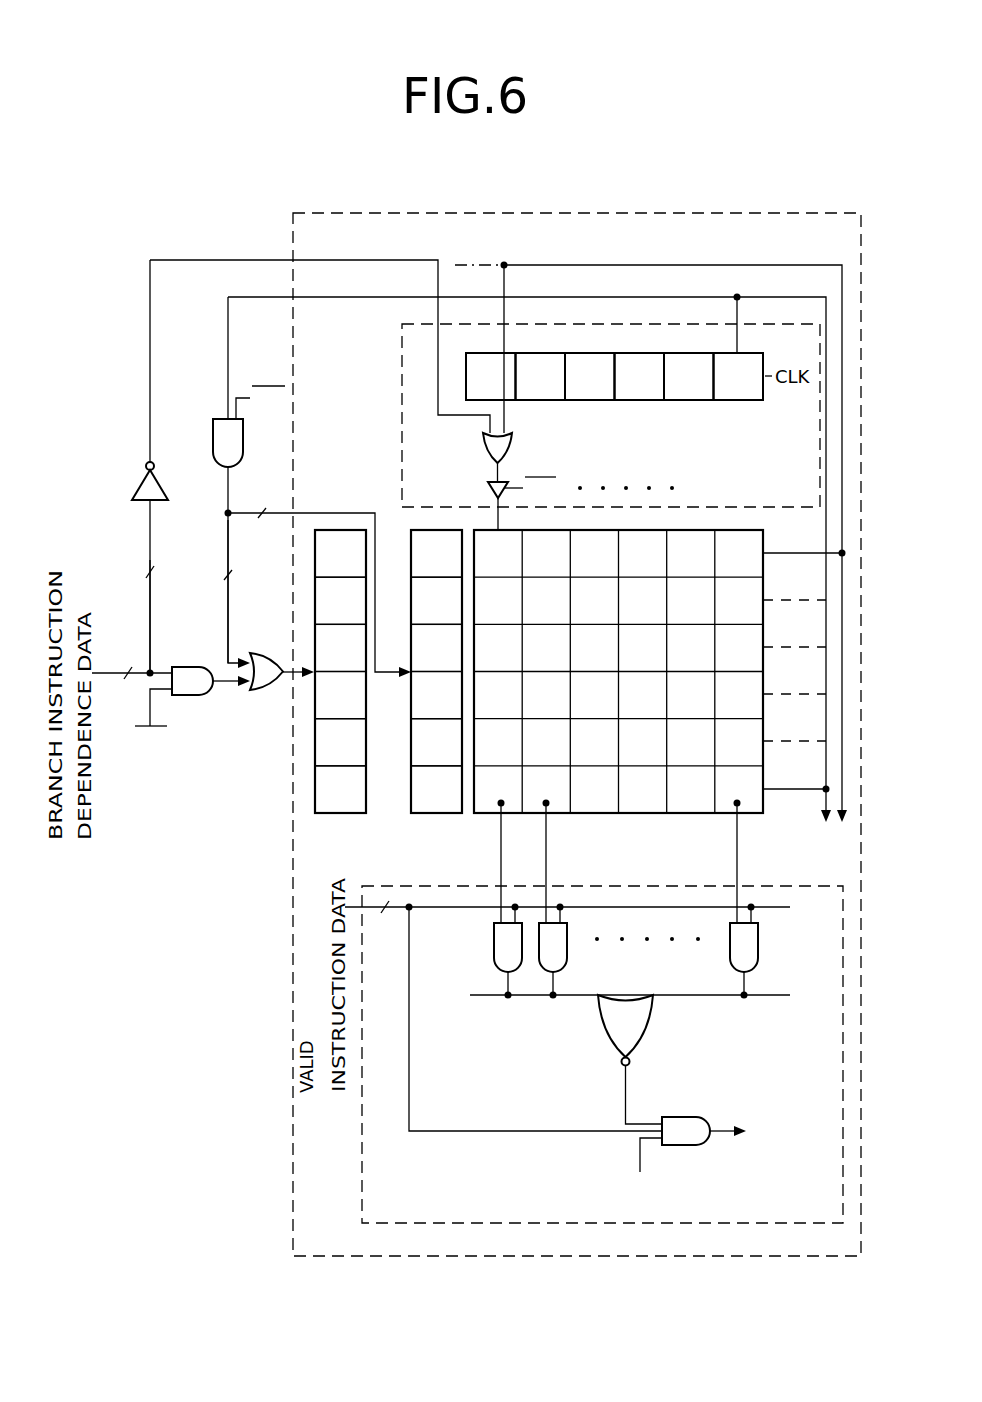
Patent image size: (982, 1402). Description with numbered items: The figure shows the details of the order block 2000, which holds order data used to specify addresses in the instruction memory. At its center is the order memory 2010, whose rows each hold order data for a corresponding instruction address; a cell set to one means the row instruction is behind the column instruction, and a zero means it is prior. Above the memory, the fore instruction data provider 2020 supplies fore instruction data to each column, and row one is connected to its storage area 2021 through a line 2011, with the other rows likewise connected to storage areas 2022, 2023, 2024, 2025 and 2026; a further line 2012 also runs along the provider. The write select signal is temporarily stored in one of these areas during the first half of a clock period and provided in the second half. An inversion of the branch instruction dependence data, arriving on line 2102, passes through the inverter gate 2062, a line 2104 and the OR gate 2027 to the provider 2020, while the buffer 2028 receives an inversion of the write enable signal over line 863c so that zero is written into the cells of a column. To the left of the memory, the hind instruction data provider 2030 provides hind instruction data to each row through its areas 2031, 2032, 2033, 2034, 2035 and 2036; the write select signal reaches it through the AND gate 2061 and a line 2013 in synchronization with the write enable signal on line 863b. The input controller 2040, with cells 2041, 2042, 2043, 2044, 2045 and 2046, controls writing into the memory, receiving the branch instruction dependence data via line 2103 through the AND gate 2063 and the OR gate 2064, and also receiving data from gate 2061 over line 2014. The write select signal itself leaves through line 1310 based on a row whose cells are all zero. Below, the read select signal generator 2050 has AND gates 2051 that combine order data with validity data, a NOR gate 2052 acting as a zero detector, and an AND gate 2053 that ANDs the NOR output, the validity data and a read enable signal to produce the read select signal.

The order block 2000 is at (388, 213).
The line 2104 is at (200, 260).
The line 2011 is at (586, 265).
The signal line 2012 is at (737, 308).
The fore instruction data provider 2020 is at (402, 398).
The storage area 2021 is at (491, 376).
The storage area 2022 is at (541, 376).
The storage area 2023 is at (590, 376).
The storage area 2024 is at (640, 376).
The storage area 2025 is at (689, 376).
The area 2026 is at (739, 376).
The OR gate 2027 is at (512, 436).
The buffer 2028 is at (488, 490).
The line 863b is at (250, 396).
The line 863c is at (523, 488).
The line 2013 is at (344, 513).
The line 2014 is at (264, 594).
The order memory 2010 is at (737, 530).
The hind instruction data provider 2030 is at (420, 815).
The area 2031 is at (436, 553).
The area 2032 is at (436, 600).
The area 2033 is at (436, 647).
The area 2034 is at (436, 695).
The area 2035 is at (436, 742).
The area 2036 is at (436, 789).
The input controller 2040 is at (325, 815).
The register cell 2041 is at (340, 553).
The register cell 2042 is at (340, 600).
The register cell 2043 is at (340, 647).
The register cell 2044 is at (340, 695).
The register cell 2045 is at (340, 742).
The register cell 2046 is at (340, 789).
The AND gate 2061 is at (213, 426).
The inverter gate 2062 is at (145, 466).
The signal line 2103 is at (187, 598).
The line 2102 is at (128, 677).
The AND gate 2063 is at (185, 667).
The OR gate 2064 is at (262, 692).
The line 1310 is at (826, 806).
The AND gates 2051 is at (494, 956).
The NOR gate 2052 is at (605, 1046).
The AND gate 2053 is at (712, 1099).
The read select signal generator 2050 is at (362, 1176).